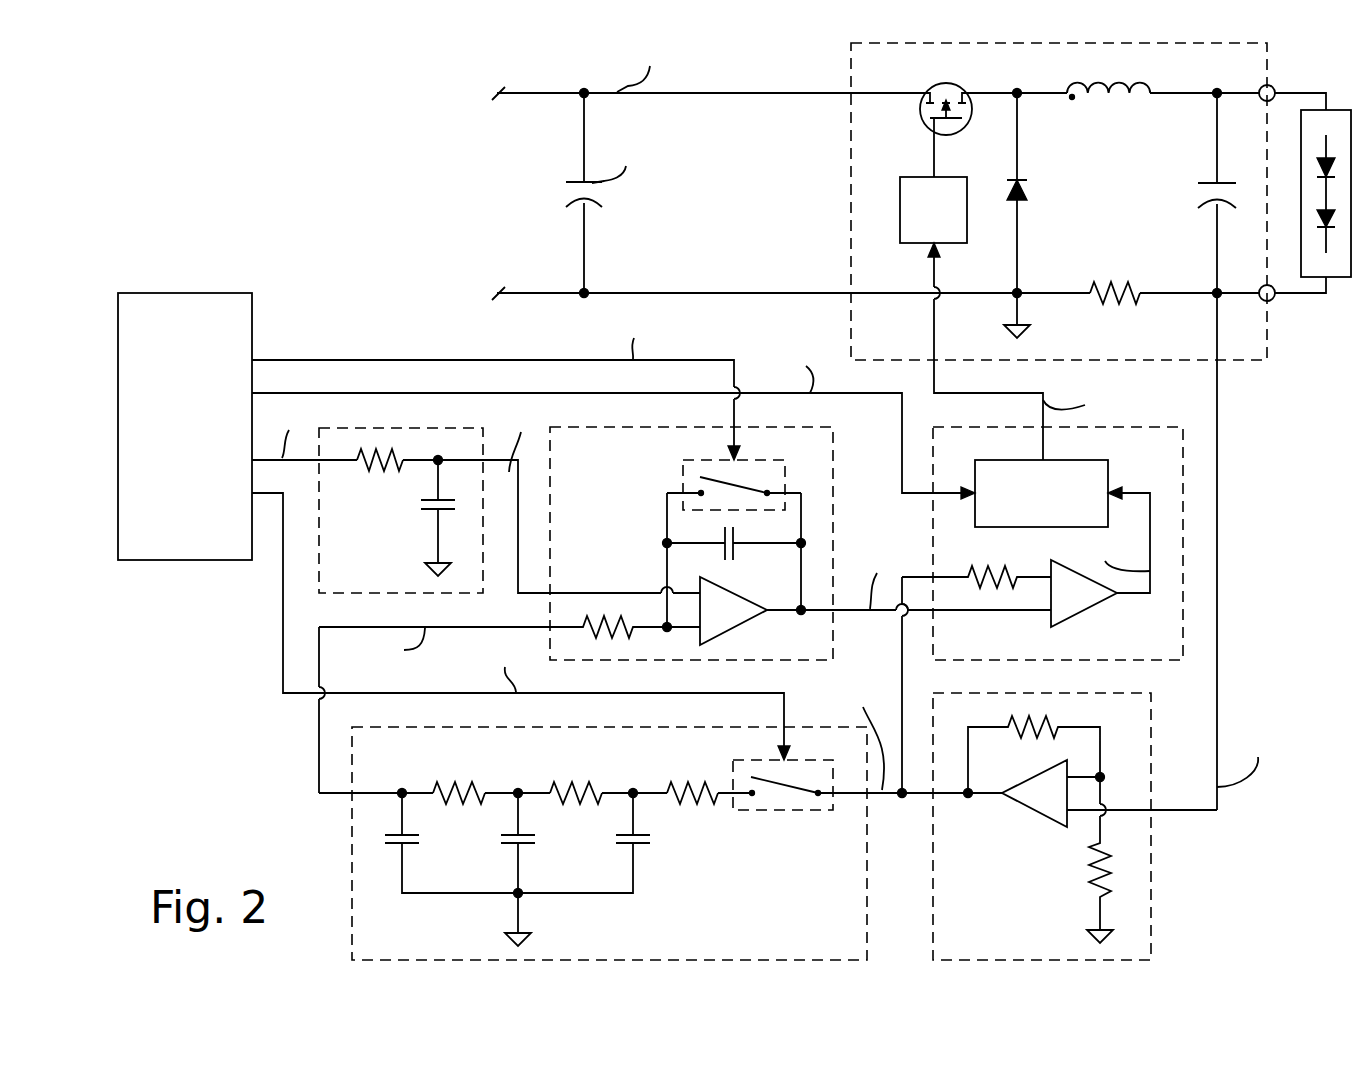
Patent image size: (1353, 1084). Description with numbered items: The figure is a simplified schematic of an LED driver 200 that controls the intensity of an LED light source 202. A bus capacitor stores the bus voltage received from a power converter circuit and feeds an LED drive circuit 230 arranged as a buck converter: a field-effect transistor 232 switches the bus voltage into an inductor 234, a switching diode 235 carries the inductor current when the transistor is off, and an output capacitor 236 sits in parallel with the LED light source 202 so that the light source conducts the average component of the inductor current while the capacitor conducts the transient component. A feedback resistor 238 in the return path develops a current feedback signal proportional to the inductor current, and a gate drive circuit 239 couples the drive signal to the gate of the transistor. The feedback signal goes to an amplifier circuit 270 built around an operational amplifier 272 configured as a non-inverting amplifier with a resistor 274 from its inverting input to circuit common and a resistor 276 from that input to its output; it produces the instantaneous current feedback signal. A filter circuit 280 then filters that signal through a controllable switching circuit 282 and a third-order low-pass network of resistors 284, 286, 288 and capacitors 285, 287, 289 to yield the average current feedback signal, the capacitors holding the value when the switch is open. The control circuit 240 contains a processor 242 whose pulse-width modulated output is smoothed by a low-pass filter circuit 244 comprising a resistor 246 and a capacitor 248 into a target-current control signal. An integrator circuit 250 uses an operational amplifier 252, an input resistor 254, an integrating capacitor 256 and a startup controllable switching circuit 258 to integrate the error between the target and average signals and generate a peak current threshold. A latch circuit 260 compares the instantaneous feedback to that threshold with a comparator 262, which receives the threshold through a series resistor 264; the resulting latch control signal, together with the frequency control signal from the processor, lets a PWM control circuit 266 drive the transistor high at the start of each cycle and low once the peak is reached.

The LED driver 200 is at (262, 152).
The LED light source 202 is at (1338, 262).
The LED drive circuit 230 is at (851, 182).
The field-effect transistor 232 is at (931, 86).
The inductor 234 is at (1108, 100).
The switching diode 235 is at (1030, 192).
The output capacitor 236 is at (1198, 185).
The feedback resistor 238 is at (1122, 292).
The gate drive circuit 239 is at (900, 217).
The control circuit 240 is at (238, 598).
The processor 242 is at (167, 497).
The low-pass filter circuit 244 is at (432, 594).
The resistor 246 is at (378, 471).
The capacitor 248 is at (428, 512).
The integrator circuit 250 is at (833, 492).
The operational amplifier 252 is at (730, 615).
The resistor 254 is at (622, 632).
The capacitor 256 is at (733, 550).
The controllable switching circuit 258 is at (683, 470).
The latch circuit 260 is at (1183, 448).
The comparator 262 is at (1072, 598).
The resistor R264 264 is at (990, 570).
The PWM control circuit 266 is at (1105, 480).
The amplifier circuit 270 is at (1151, 867).
The operational amplifier 272 is at (1034, 795).
The resistor 274 is at (1088, 870).
The resistor 276 is at (1020, 728).
The filter circuit 280 is at (352, 870).
The controllable switching circuit 282 is at (808, 812).
The resistor 284 is at (704, 778).
The capacitor 285 is at (642, 845).
The resistor 286 is at (556, 782).
The capacitor 287 is at (526, 845).
The resistor 288 is at (440, 778).
The capacitor 289 is at (410, 845).